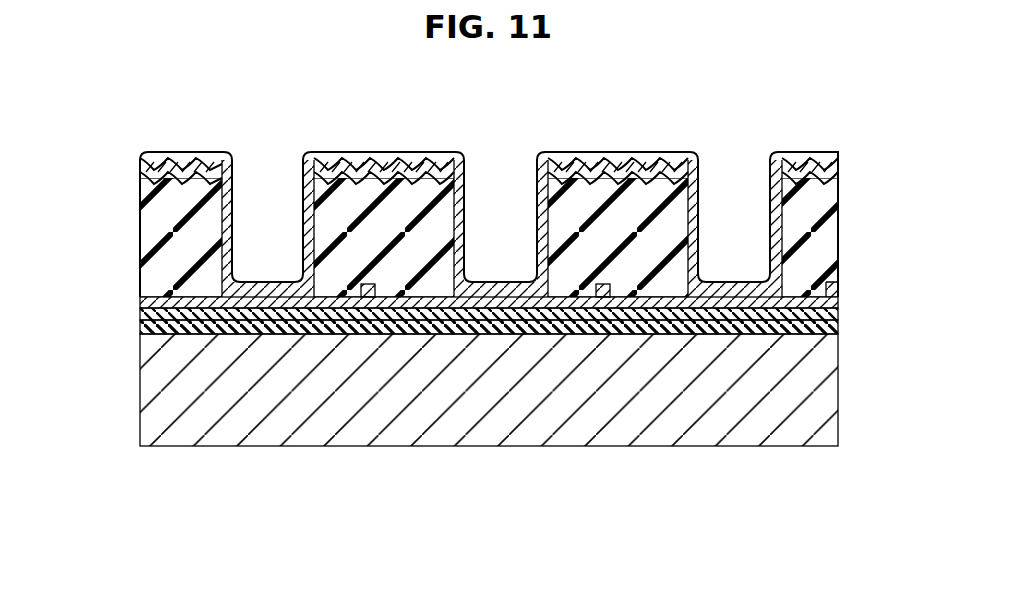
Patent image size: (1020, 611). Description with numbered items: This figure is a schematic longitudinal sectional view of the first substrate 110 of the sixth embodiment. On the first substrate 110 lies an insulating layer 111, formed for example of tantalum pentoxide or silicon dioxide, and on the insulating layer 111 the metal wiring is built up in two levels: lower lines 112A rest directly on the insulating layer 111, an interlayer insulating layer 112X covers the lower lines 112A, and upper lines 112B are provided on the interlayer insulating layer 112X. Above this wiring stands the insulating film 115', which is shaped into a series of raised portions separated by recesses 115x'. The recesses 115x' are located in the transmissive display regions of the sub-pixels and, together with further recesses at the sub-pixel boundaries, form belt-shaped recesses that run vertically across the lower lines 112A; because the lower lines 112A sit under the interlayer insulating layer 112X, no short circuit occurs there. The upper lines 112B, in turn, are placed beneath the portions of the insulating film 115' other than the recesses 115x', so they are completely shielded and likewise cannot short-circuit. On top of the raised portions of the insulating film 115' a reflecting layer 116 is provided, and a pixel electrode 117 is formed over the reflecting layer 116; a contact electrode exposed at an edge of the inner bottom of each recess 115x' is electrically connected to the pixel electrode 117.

The first substrate 110 is at (833, 388).
The insulating layer 111 is at (833, 330).
The lower lines 112A is at (140, 314).
The interlayer insulating layer 112X is at (140, 303).
The upper lines 112B is at (368, 297).
The insulating film 115' is at (529, 224).
The recesses 115x' is at (501, 190).
The reflecting layer 116 is at (150, 178).
The pixel electrode 117 is at (190, 152).